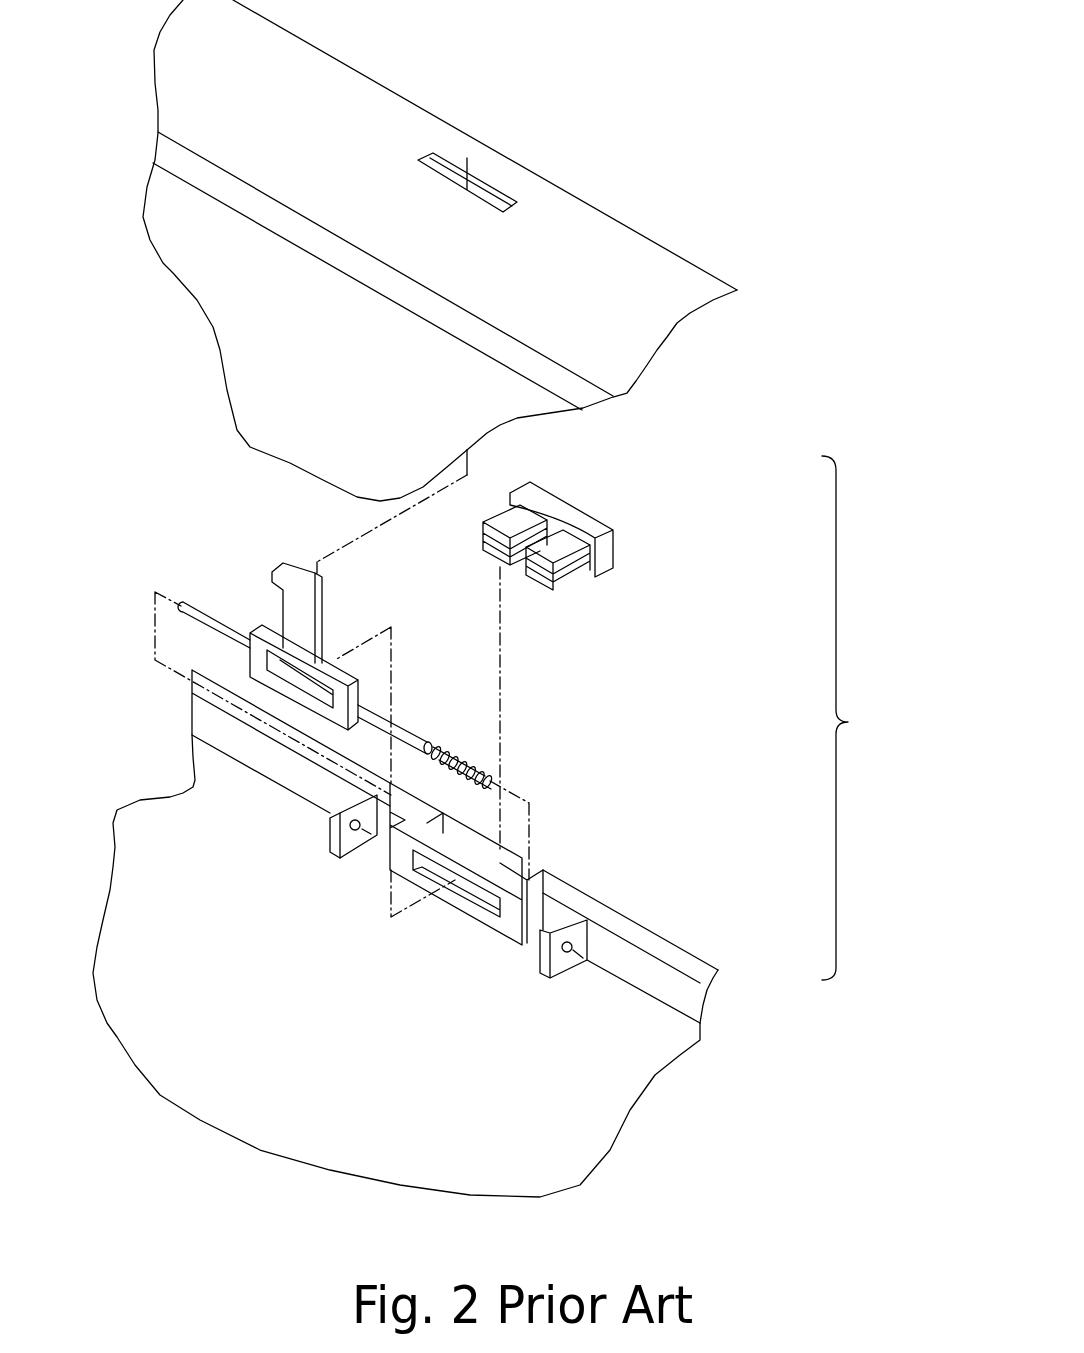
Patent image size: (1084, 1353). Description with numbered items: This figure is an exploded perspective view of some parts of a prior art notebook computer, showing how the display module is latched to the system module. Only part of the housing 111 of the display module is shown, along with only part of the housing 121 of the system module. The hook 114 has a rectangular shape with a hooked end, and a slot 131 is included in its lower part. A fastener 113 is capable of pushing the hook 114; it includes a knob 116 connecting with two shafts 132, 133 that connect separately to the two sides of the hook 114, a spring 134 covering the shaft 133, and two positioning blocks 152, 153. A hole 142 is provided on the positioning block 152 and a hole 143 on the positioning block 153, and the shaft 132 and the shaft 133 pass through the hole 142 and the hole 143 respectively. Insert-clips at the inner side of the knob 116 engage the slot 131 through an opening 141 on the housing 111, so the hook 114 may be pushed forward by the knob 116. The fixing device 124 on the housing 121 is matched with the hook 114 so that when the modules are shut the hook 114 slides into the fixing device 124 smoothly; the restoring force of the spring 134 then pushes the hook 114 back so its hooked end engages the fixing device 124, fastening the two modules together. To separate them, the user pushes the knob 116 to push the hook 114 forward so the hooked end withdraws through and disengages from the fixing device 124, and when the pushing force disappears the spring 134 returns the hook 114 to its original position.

The housing 111 is at (459, 933).
The fastener 113 is at (848, 722).
The hook 114 is at (270, 579).
The knob 116 is at (577, 522).
The housing 121 is at (440, 250).
The fixing device 124 is at (494, 153).
The slot 131 is at (211, 677).
The shaft 132 is at (199, 581).
The shaft 133 is at (401, 703).
The spring 134 is at (461, 736).
The opening 141 is at (492, 864).
The hole 142 is at (346, 869).
The hole 143 is at (557, 981).
The positioning block 152 is at (210, 810).
The positioning block 153 is at (565, 885).